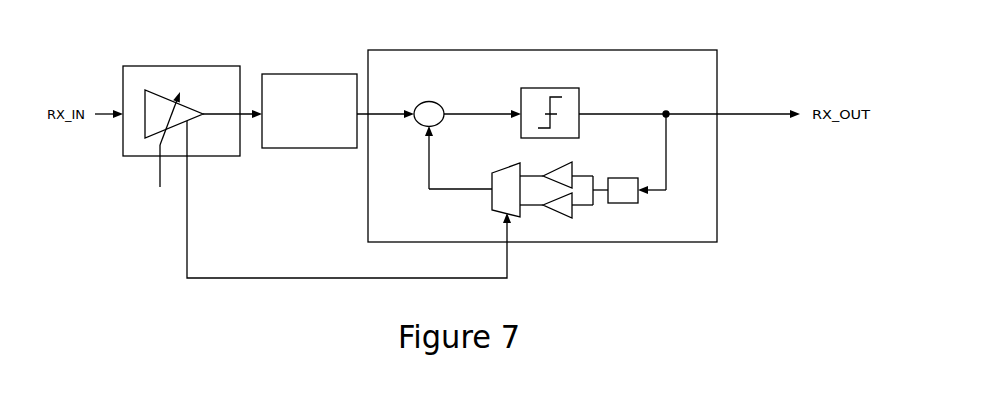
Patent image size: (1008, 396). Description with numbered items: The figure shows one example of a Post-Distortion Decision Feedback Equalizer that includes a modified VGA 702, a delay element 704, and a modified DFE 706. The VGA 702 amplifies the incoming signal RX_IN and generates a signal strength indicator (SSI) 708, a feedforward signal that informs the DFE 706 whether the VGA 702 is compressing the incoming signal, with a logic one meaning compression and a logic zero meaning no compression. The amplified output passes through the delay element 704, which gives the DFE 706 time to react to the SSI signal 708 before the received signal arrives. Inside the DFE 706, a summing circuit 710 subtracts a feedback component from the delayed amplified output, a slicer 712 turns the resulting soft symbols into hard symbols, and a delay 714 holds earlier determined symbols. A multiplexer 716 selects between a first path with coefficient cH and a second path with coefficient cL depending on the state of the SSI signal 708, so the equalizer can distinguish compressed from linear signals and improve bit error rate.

The modified VGA 702 is at (177, 65).
The delay element 704 is at (277, 73).
The modified DFE 706 is at (643, 50).
The signal strength indicator (SSI) 708 is at (310, 254).
The summing circuit 710 is at (430, 97).
The slicer 712 is at (580, 102).
The delay 714 is at (610, 204).
The multiplexer 716 is at (490, 206).